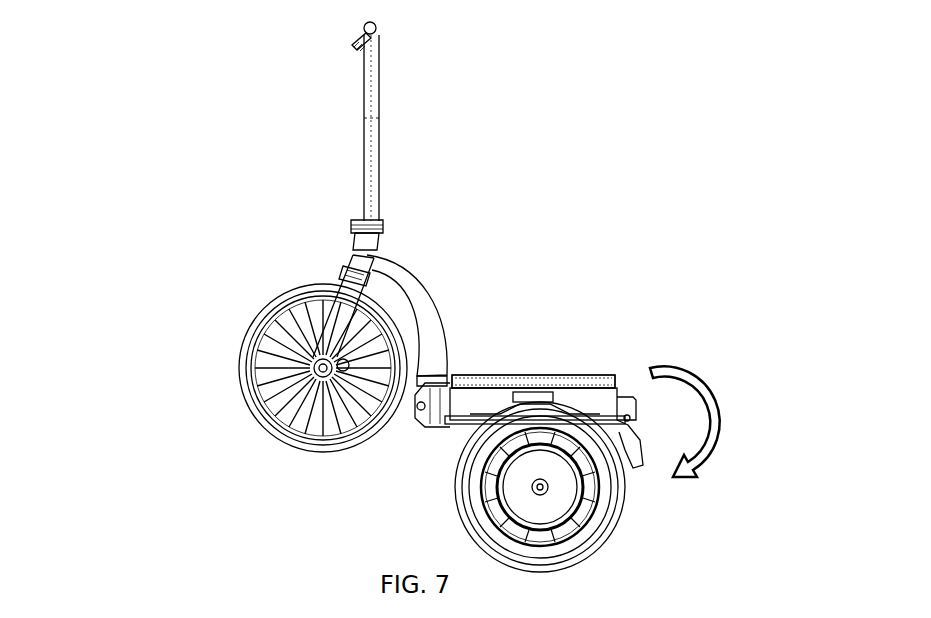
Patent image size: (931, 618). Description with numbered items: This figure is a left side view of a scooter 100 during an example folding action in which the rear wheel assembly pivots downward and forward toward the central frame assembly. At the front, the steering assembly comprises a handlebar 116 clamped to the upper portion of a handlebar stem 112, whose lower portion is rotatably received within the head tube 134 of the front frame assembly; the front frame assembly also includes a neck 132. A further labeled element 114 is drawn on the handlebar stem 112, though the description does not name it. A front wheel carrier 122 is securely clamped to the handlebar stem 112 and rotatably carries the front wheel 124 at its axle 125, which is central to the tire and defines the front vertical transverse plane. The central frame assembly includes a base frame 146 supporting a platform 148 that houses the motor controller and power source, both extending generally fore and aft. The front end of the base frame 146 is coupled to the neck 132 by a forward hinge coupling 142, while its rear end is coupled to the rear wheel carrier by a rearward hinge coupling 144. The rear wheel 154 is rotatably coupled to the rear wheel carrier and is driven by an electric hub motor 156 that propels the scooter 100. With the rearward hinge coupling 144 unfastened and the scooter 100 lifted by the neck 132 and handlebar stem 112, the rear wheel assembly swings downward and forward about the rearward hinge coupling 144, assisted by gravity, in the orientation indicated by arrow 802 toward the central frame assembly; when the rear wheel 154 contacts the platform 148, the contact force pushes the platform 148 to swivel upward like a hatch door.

The scooter 100 is at (160, 116).
The handlebar stem 112 is at (380, 170).
The column joint 114 is at (353, 224).
The handlebar 116 is at (362, 45).
The front wheel carrier 122 is at (335, 312).
The front wheel 124 is at (244, 395).
The axle 125 is at (316, 371).
The neck 132 is at (444, 332).
The head tube 134 is at (380, 247).
The forward hinge coupling 142 is at (421, 412).
The rearward hinge coupling 144 is at (630, 396).
The base frame 146 is at (455, 430).
The platform 148 is at (590, 377).
The rear wheel 154 is at (620, 512).
The electric hub motor 156 is at (576, 505).
The arrow 802 is at (716, 385).